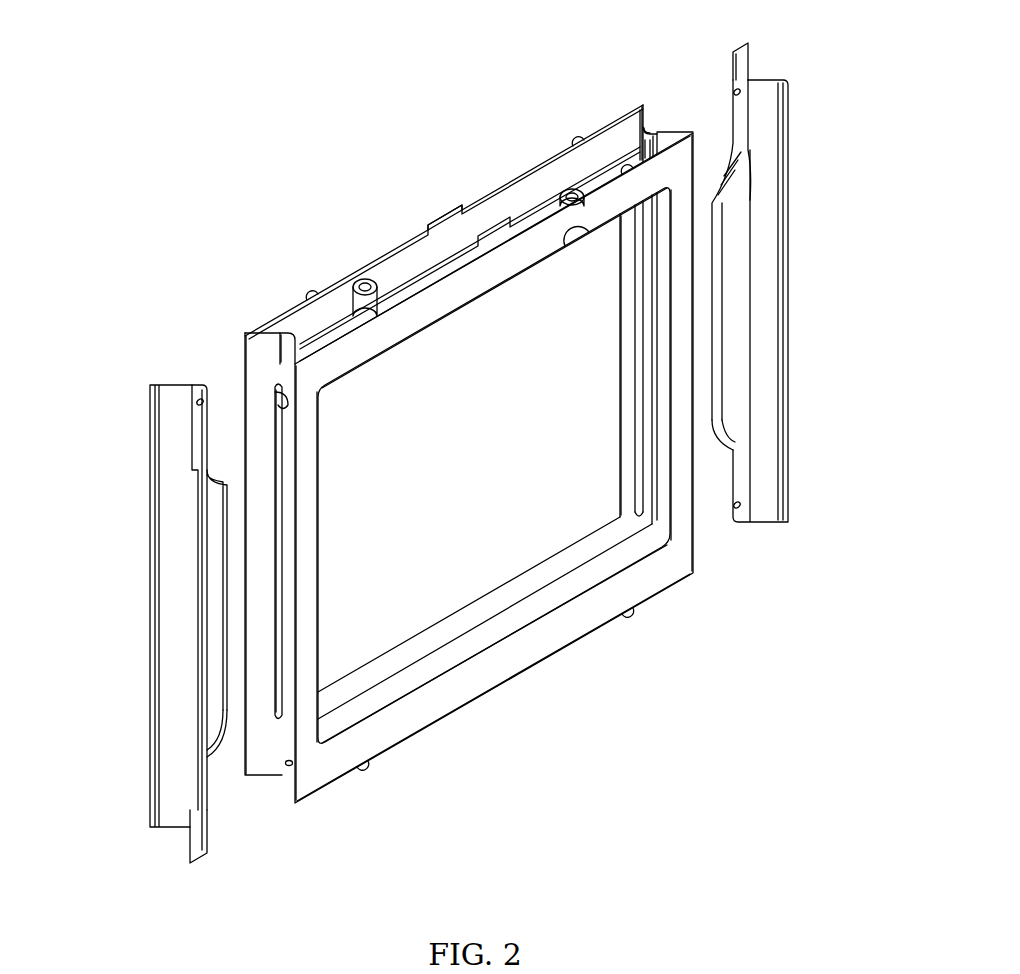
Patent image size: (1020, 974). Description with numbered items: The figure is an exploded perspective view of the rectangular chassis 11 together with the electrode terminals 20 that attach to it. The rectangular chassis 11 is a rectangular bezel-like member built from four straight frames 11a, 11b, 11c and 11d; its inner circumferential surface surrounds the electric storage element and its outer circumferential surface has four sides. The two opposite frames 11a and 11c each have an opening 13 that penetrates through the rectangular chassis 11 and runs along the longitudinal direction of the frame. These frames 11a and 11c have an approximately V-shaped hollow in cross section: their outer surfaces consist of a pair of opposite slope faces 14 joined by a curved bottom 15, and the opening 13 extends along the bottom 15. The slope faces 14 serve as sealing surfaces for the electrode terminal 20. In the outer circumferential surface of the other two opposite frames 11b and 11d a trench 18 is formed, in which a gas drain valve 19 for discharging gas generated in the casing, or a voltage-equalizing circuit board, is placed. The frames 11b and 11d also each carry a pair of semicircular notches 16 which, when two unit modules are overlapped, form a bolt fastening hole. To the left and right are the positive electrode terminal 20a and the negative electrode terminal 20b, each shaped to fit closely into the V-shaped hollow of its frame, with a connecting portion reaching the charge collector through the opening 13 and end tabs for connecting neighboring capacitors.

The rectangular chassis 11 is at (485, 186).
The frame 11a is at (318, 487).
The frame 11b is at (455, 300).
The frame 11c is at (628, 375).
The frame 11d is at (483, 605).
The opening 13 is at (282, 405).
The slope face 14 is at (270, 345).
The bottom 15 is at (262, 355).
The notch 16 is at (311, 293).
The trench 18 is at (410, 252).
The gas drain valve 19 is at (362, 279).
The electrode terminal 20 is at (468, 462).
The positive electrode terminal 20a is at (149, 610).
The negative electrode terminal 20b is at (799, 275).